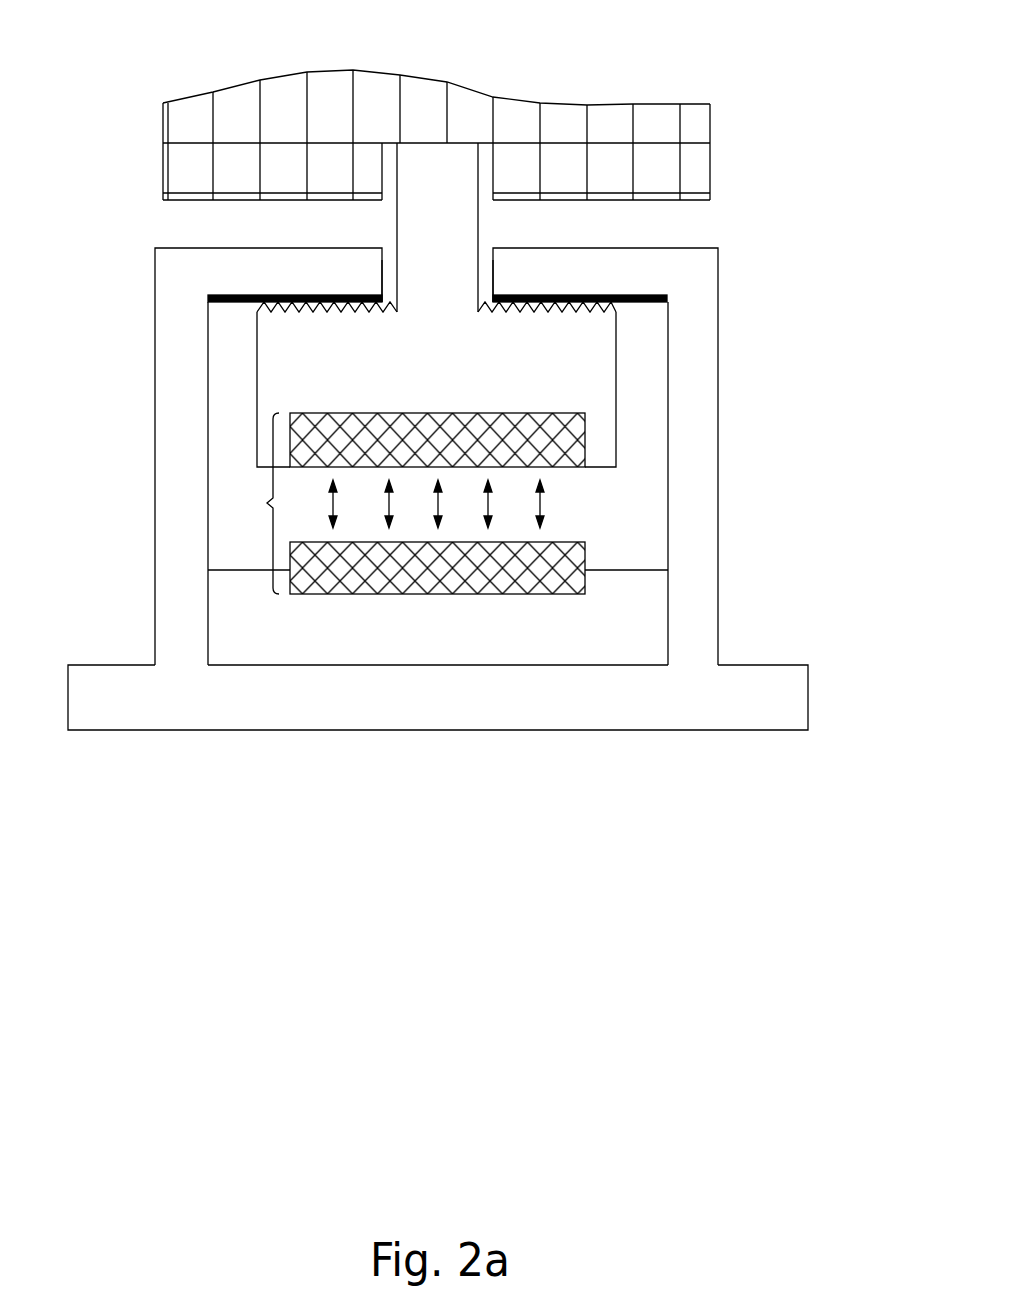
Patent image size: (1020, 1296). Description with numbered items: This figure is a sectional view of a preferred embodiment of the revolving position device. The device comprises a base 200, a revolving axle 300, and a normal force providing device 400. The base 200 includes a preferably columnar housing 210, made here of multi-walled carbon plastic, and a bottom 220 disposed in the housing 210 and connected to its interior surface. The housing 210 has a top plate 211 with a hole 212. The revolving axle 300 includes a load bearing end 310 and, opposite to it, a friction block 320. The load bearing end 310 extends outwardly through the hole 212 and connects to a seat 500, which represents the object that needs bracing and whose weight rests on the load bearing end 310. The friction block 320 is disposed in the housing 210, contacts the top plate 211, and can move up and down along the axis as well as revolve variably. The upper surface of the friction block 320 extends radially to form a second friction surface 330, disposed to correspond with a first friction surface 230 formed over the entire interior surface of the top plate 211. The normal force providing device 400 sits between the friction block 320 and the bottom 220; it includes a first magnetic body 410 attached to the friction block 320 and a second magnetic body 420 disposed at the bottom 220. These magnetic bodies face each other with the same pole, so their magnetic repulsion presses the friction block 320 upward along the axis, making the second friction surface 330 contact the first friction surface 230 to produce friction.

The base 200 is at (737, 502).
The housing 210 is at (435, 518).
The top plate 211 is at (203, 248).
The hole 212 is at (389, 243).
The bottom 220 is at (508, 637).
The first friction surface 230 is at (237, 297).
The revolving axle 300 is at (551, 233).
The load bearing end 310 is at (436, 140).
The friction block 320 is at (617, 357).
The second friction surface 330 is at (613, 307).
The normal force providing device 400 is at (326, 491).
The first magnetic body 410 is at (362, 418).
The second magnetic body 420 is at (362, 593).
The seat 500 is at (712, 118).